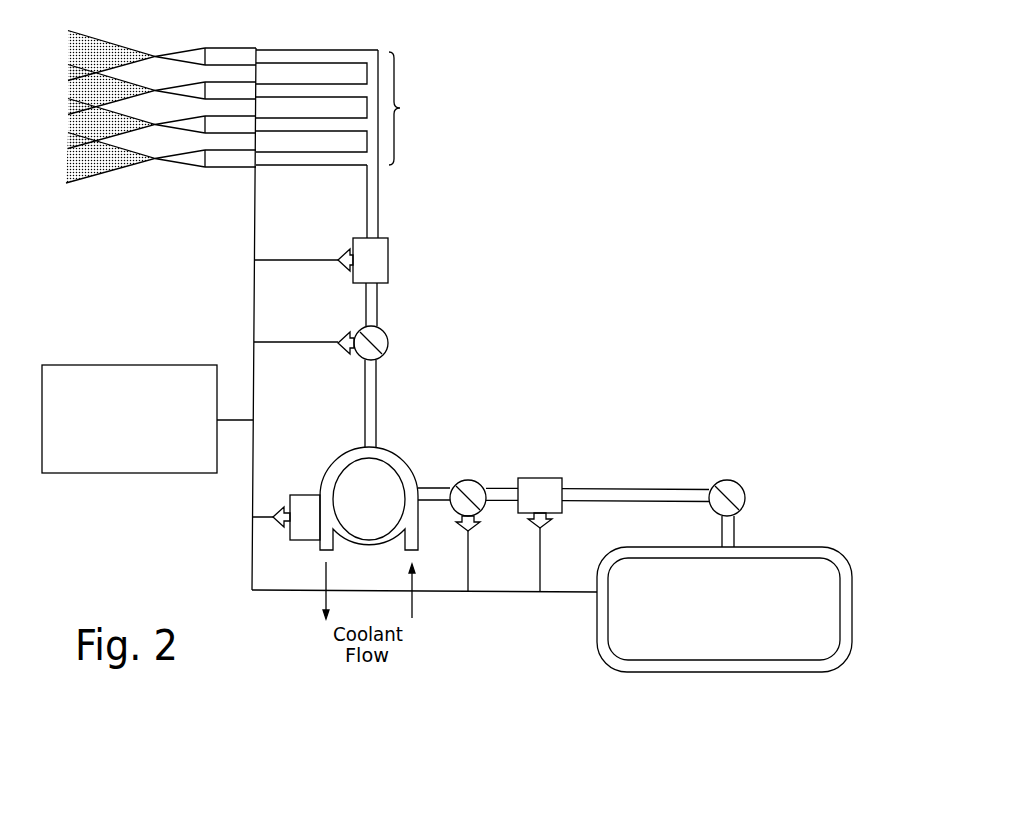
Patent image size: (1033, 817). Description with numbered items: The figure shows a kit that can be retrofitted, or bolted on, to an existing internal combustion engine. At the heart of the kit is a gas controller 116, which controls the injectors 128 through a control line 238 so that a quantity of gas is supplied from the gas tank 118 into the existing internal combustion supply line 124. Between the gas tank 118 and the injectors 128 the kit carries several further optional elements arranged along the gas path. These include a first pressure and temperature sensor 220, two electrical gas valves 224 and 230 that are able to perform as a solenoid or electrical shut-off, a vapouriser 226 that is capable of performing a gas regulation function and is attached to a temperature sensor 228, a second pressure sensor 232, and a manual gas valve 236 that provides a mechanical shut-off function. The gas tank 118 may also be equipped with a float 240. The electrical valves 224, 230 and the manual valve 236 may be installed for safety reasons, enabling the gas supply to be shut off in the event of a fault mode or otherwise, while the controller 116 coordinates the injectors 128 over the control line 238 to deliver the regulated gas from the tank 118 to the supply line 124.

The gas controller 116 is at (117, 473).
The gas tank 118 is at (787, 547).
The internal combustion supply line 124 is at (378, 206).
The injectors 128 is at (400, 108).
The first pressure and temperature sensor 220 is at (388, 262).
The electrical gas valve 224 is at (388, 341).
The vapouriser 226 is at (393, 451).
The temperature sensor 228 is at (302, 495).
The electrical gas valve 230 is at (475, 480).
The second pressure sensor 232 is at (541, 478).
The valve 236 is at (742, 487).
The control line 238 is at (255, 302).
The float 240 is at (604, 607).